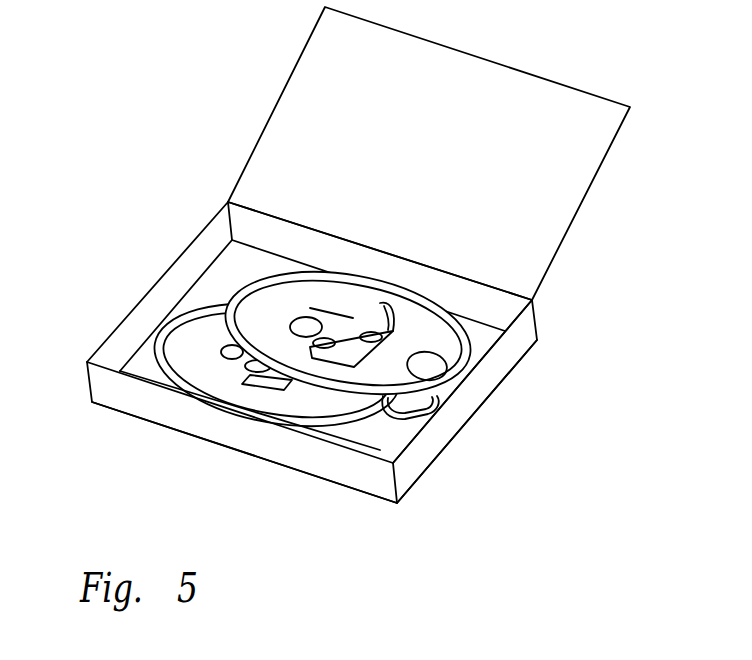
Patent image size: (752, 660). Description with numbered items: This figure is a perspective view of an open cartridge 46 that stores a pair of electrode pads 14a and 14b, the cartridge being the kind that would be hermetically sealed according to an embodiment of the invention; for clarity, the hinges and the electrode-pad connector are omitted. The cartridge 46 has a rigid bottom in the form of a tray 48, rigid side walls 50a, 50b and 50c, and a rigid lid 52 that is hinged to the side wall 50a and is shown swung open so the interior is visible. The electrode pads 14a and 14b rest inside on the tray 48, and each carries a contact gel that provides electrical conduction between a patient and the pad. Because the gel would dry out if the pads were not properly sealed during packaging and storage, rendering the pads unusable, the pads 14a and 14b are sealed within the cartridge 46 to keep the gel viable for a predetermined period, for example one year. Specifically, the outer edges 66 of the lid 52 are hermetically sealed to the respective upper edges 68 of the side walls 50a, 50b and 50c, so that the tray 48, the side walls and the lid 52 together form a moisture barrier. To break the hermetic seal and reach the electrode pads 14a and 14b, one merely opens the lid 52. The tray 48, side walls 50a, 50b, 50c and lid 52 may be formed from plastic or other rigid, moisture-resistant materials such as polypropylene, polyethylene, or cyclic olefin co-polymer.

The cartridge 46 is at (341, 280).
The tray 48 is at (385, 448).
The side wall 50a is at (489, 381).
The side wall 50b is at (143, 403).
The side wall 50c is at (153, 281).
The lid 52 is at (438, 152).
The outer edges 66 is at (270, 111).
The upper edges 68 is at (260, 214).
The electrode pad 14a is at (338, 292).
The electrode pad 14b is at (202, 358).